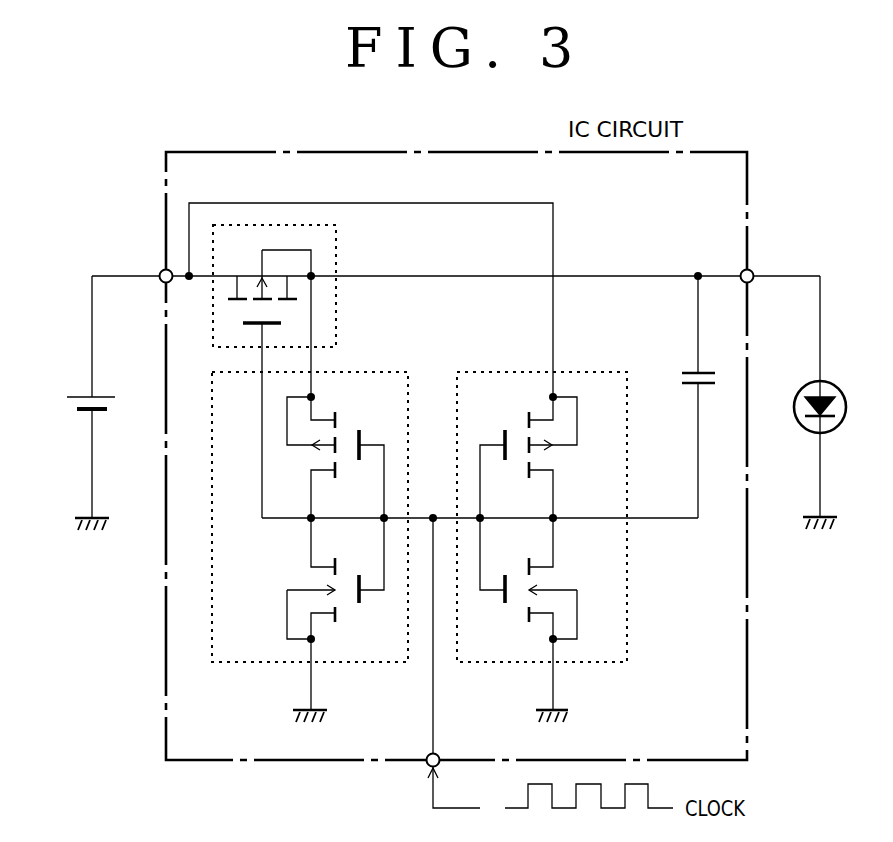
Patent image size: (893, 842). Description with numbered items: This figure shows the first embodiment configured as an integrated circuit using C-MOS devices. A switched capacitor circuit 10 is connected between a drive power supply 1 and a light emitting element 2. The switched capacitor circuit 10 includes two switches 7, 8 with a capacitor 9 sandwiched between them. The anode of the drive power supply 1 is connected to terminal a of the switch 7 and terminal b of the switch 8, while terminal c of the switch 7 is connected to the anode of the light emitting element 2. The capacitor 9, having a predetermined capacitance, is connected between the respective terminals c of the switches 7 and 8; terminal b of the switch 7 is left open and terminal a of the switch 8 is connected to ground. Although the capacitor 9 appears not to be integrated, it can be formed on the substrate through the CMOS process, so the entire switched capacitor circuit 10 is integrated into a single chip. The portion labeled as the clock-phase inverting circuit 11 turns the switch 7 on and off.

The drive power supply 1 is at (105, 385).
The light emitting element 2 is at (795, 420).
The switch 7 is at (337, 243).
The switch 8 is at (627, 647).
The capacitor 9 is at (672, 382).
The switched capacitor circuit 10 is at (313, 152).
The clock-phase inverting circuit 11 is at (245, 662).